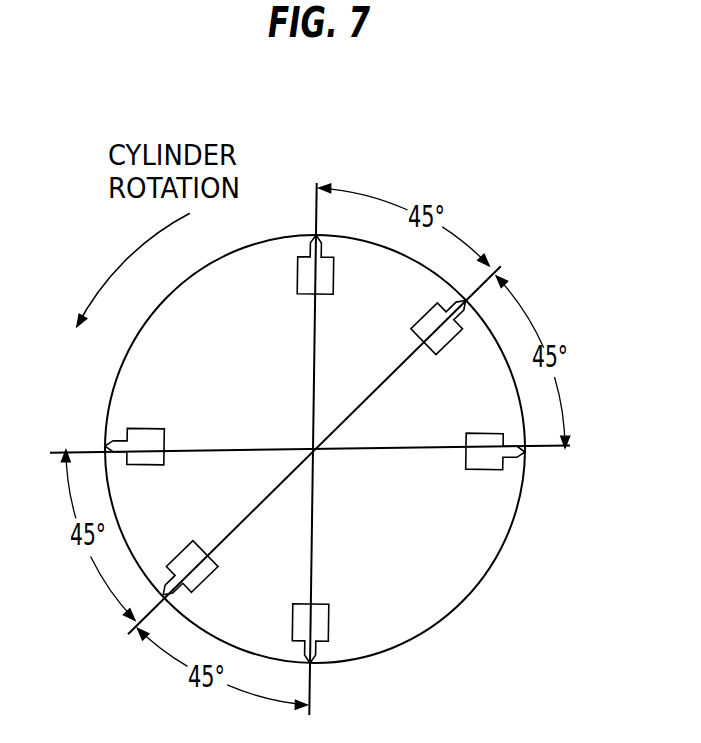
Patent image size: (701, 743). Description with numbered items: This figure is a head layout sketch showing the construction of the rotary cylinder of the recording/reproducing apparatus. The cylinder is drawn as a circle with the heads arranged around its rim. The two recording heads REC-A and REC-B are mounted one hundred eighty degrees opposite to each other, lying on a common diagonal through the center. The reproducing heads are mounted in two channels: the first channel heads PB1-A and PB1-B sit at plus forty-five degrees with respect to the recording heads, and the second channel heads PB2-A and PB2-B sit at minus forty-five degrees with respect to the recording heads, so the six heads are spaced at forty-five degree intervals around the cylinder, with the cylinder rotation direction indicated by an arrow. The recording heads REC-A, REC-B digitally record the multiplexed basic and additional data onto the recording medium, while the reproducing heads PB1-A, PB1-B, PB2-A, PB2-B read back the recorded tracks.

The reproducing head PB1-A is at (345, 282).
The recording head REC-A is at (444, 350).
The reproducing head PB2-A is at (476, 471).
The reproducing head PB2-B is at (161, 466).
The recording head REC-B is at (225, 576).
The reproducing head PB1-B is at (348, 633).